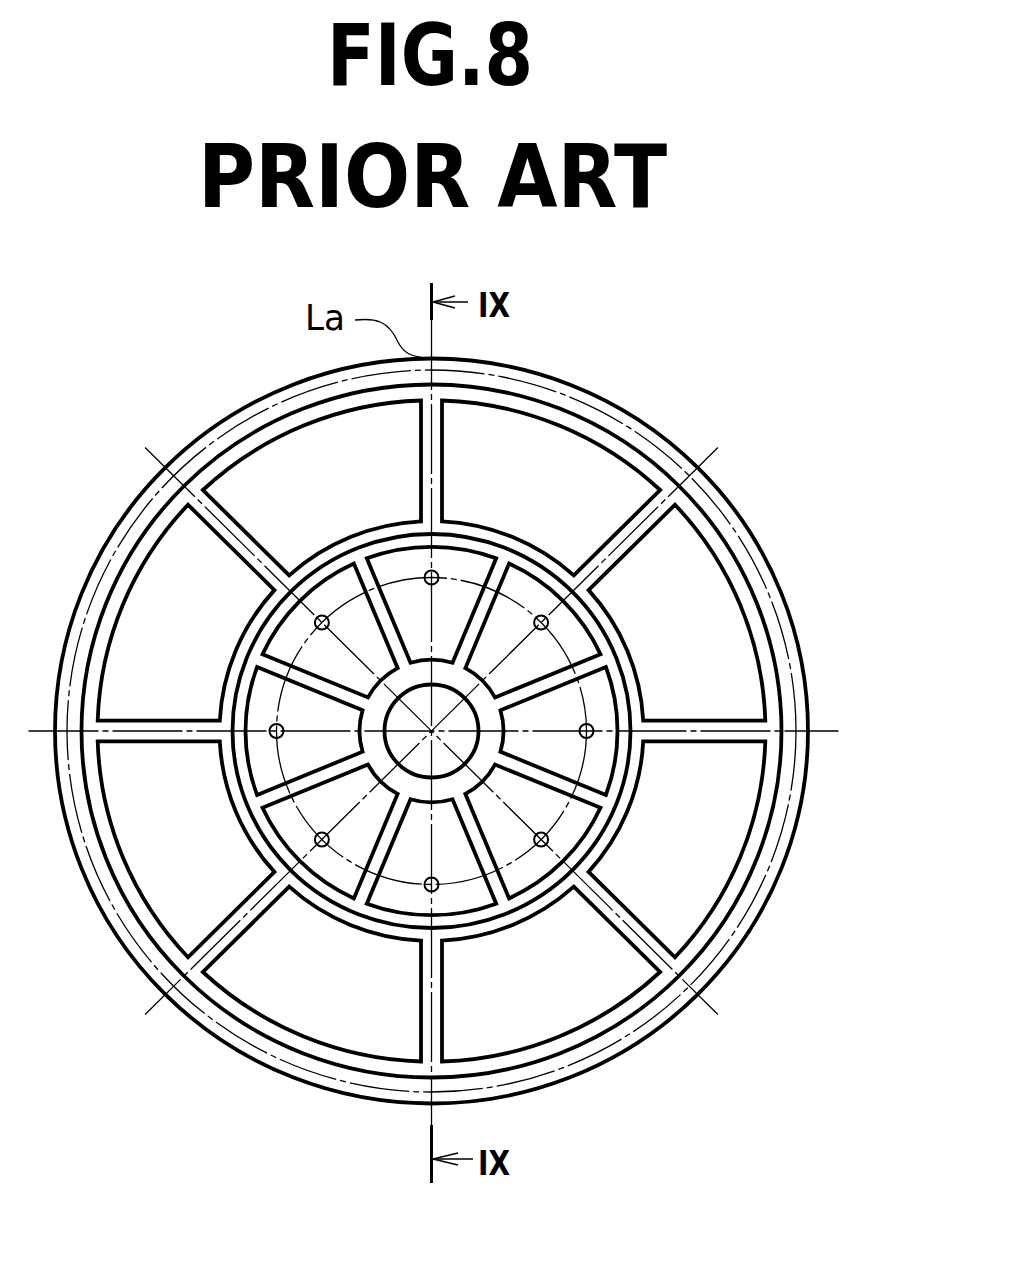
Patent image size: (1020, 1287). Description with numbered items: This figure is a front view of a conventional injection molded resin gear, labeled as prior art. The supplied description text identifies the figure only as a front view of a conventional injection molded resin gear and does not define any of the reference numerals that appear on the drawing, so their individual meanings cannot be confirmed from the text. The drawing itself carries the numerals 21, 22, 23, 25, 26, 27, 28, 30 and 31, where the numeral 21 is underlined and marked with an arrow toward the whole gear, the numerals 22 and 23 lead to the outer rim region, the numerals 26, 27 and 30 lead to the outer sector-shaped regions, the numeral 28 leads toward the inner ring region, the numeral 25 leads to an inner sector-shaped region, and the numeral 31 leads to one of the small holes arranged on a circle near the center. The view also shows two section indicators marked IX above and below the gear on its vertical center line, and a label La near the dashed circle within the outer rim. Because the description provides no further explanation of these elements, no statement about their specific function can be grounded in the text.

The rotor (prior art) 21 is at (628, 392).
The outer cylindrical wall 22 is at (725, 493).
The outer peripheral surface 23 is at (747, 528).
The inner partition sector 25 is at (572, 843).
The outer partition sector 26 is at (727, 843).
The outer sector wall 27 is at (765, 753).
The inner ring 28 is at (346, 561).
The outer sector (recess) 30 is at (417, 447).
The bolt hole 31 is at (433, 568).